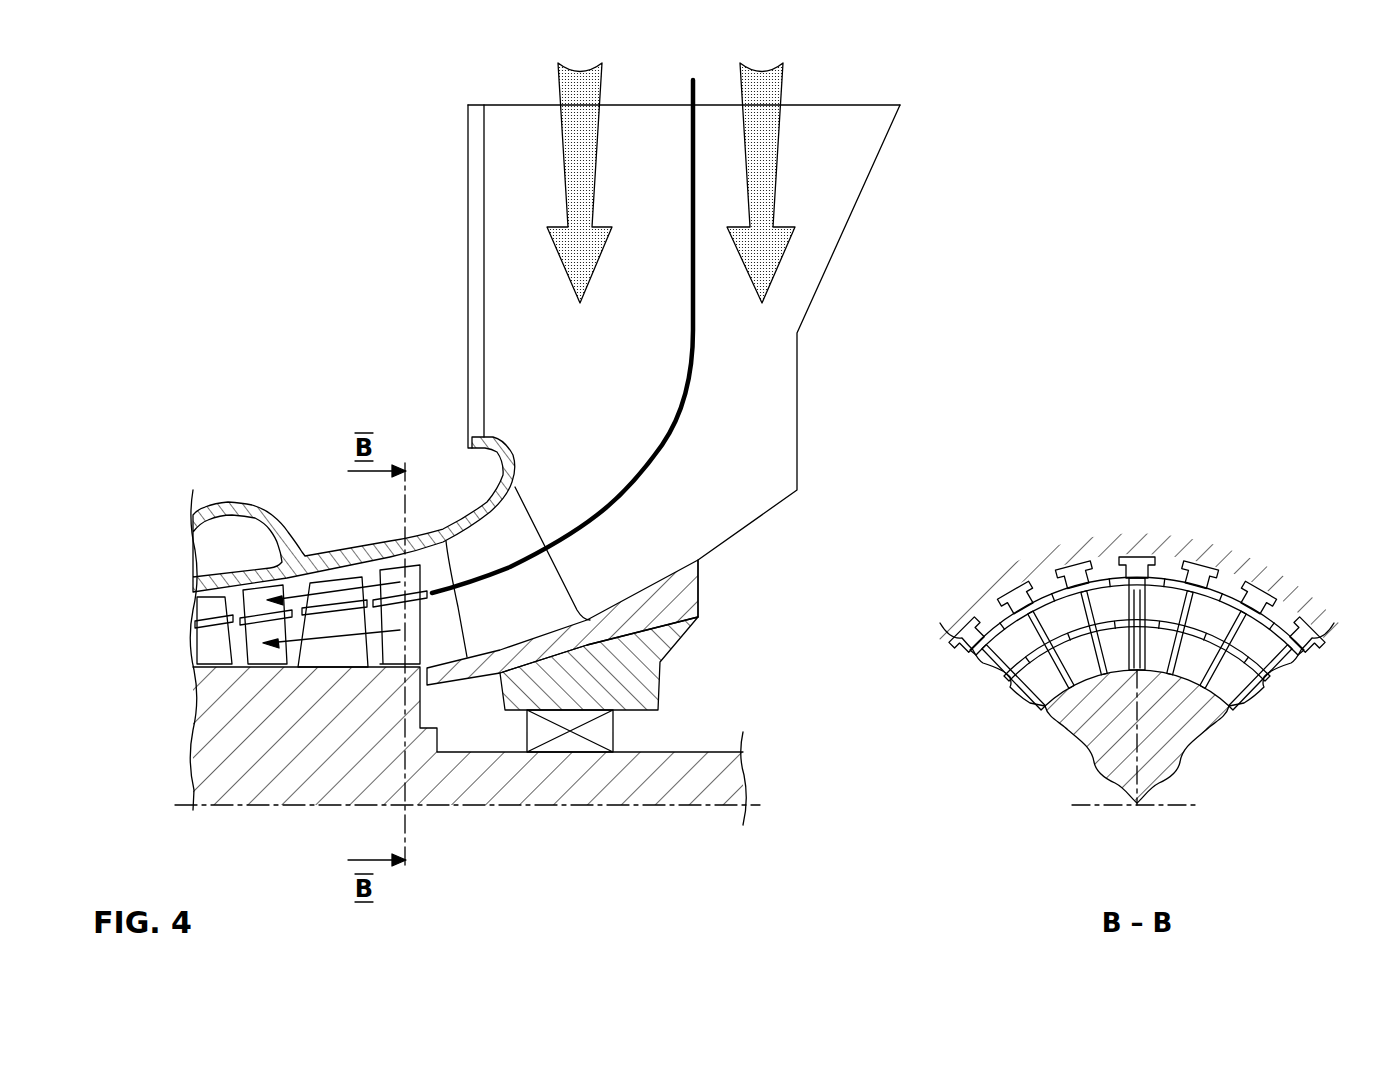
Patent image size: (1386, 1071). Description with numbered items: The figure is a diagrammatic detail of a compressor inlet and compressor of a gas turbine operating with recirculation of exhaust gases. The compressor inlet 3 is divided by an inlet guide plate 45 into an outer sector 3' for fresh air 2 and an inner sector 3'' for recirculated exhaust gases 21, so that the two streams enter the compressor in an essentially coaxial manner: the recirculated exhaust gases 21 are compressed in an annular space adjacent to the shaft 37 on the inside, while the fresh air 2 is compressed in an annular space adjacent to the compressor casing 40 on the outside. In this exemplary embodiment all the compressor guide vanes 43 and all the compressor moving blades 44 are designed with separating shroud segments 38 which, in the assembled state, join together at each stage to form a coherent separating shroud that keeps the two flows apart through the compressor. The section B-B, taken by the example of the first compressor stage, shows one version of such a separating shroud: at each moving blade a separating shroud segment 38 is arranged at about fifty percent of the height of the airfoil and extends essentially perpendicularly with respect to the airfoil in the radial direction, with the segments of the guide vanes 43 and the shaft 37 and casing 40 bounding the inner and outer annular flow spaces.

The fresh air 2 is at (579, 201).
The recirculated exhaust gases 21 is at (761, 201).
The inlet guide plate 45 is at (690, 184).
The compressor inlet 3 is at (550, 381).
The outer sector 3' is at (464, 276).
The inner sector 3'' is at (803, 361).
The separating shroud segment 38 is at (393, 592).
The compressor casing 40 is at (1037, 575).
The compressor guide vanes 43 is at (413, 647).
The compressor moving blades 44 is at (333, 652).
The shaft 37 is at (639, 785).